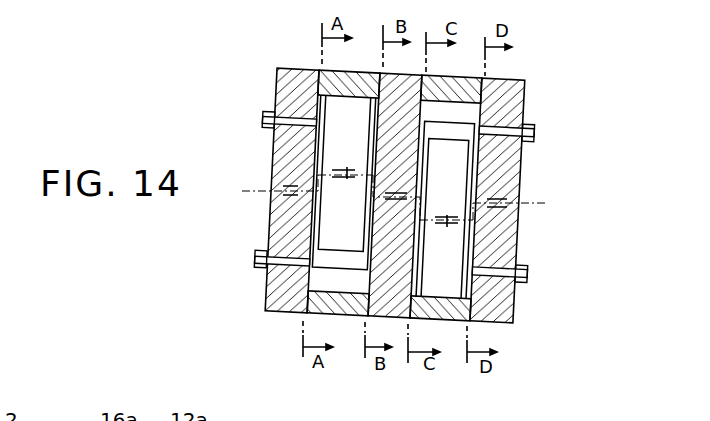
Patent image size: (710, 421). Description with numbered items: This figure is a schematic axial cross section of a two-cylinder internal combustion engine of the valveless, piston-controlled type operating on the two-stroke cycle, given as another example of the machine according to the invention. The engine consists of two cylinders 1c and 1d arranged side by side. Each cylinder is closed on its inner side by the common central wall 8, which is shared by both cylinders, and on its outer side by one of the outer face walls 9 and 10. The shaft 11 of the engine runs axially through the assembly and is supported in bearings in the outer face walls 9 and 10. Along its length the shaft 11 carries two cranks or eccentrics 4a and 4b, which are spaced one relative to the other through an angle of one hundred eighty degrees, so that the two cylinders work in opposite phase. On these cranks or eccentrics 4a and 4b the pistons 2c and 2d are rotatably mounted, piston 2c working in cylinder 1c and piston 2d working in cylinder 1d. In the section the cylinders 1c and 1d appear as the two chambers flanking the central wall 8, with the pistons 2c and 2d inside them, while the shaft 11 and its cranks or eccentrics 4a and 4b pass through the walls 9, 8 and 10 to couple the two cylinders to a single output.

The cylinder 1c is at (317, 302).
The cylinder 1d is at (460, 318).
The piston 2c is at (335, 110).
The piston 2d is at (455, 130).
The crank or eccentric 4a is at (345, 163).
The crank or eccentric 4b is at (446, 239).
The common central wall 8 is at (384, 238).
The outer face wall 9 is at (279, 230).
The outer face wall 10 is at (503, 243).
The shaft 11 is at (512, 194).